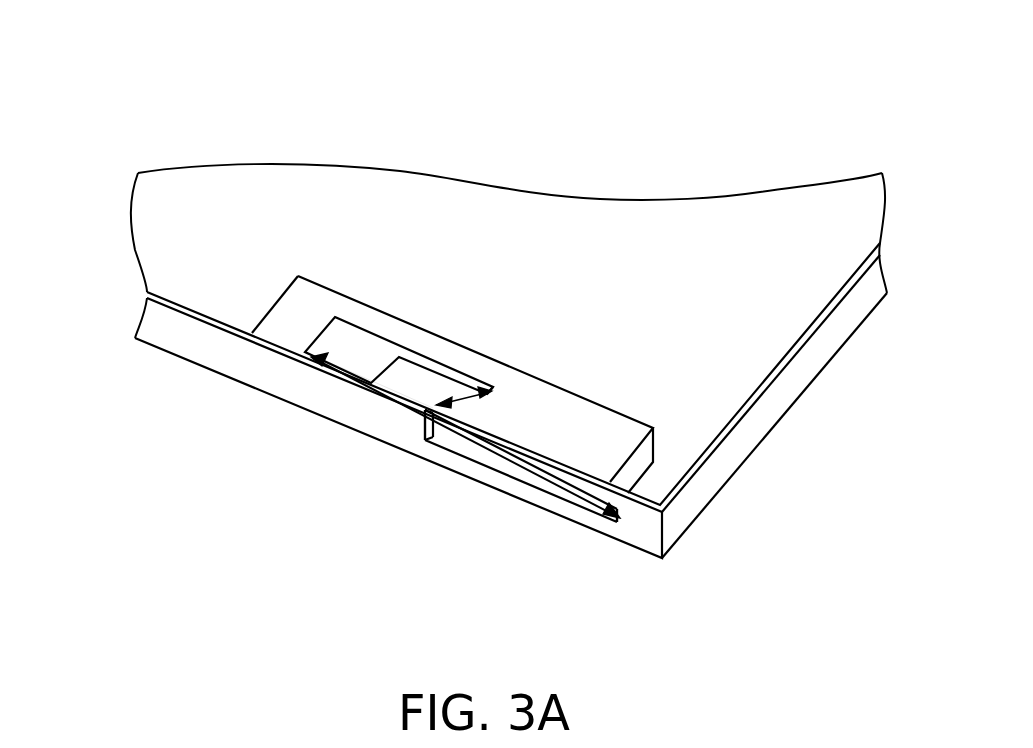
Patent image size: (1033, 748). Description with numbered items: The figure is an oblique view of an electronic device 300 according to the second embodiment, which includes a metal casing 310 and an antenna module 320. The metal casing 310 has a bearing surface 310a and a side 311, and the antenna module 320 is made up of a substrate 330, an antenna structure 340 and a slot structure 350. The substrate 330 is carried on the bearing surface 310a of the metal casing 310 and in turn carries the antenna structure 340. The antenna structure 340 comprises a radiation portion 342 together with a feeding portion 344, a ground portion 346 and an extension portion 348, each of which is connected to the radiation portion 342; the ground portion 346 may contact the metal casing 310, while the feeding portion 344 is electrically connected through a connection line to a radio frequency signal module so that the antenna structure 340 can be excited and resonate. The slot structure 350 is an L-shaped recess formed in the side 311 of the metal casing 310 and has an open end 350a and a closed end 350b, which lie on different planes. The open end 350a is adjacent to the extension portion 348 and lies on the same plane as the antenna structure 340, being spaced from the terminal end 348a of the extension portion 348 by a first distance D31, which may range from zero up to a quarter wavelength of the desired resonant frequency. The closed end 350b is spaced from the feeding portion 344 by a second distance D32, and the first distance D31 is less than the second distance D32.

The electronic device 300 is at (860, 648).
The metal casing 310 is at (855, 305).
The bearing surface 310a is at (150, 228).
The side 311 is at (155, 327).
The antenna module 320 is at (812, 25).
The substrate 330 is at (613, 443).
The antenna structure 340 is at (98, 7).
The radiation portion 342 is at (349, 340).
The feeding portion 344 is at (335, 367).
The ground portion 346 is at (400, 400).
The extension portion 348 is at (433, 360).
The terminal end 348a is at (488, 386).
The slot structure 350 is at (470, 457).
The open end 350a is at (430, 418).
The closed end 350b is at (615, 520).
The first distance D31 is at (490, 402).
The second distance D32 is at (522, 470).